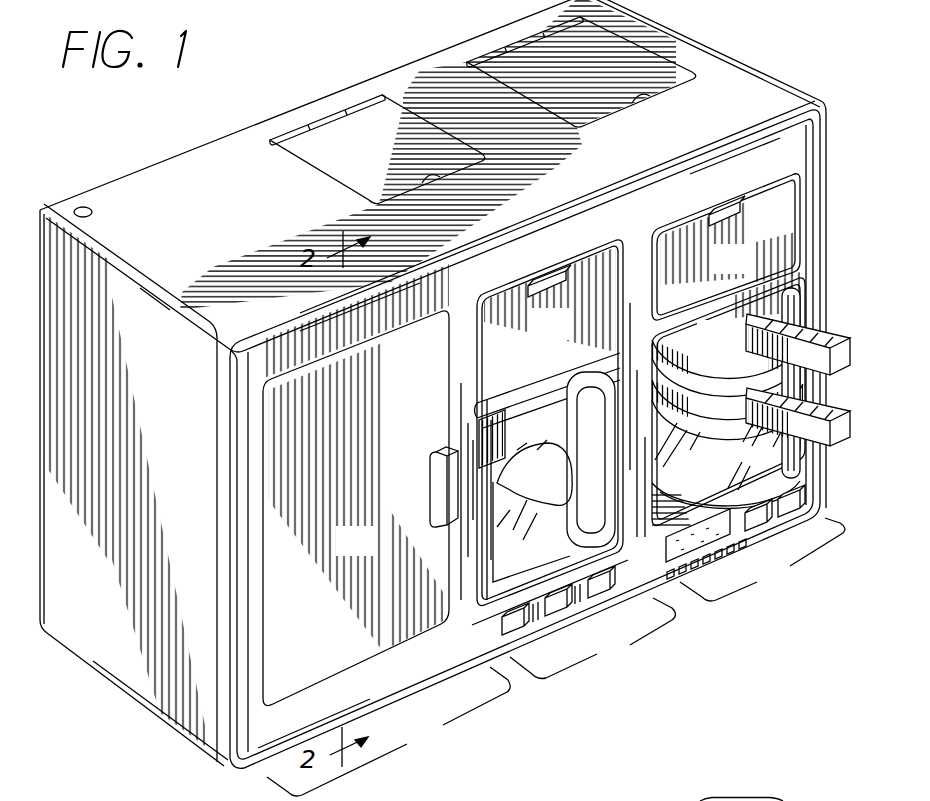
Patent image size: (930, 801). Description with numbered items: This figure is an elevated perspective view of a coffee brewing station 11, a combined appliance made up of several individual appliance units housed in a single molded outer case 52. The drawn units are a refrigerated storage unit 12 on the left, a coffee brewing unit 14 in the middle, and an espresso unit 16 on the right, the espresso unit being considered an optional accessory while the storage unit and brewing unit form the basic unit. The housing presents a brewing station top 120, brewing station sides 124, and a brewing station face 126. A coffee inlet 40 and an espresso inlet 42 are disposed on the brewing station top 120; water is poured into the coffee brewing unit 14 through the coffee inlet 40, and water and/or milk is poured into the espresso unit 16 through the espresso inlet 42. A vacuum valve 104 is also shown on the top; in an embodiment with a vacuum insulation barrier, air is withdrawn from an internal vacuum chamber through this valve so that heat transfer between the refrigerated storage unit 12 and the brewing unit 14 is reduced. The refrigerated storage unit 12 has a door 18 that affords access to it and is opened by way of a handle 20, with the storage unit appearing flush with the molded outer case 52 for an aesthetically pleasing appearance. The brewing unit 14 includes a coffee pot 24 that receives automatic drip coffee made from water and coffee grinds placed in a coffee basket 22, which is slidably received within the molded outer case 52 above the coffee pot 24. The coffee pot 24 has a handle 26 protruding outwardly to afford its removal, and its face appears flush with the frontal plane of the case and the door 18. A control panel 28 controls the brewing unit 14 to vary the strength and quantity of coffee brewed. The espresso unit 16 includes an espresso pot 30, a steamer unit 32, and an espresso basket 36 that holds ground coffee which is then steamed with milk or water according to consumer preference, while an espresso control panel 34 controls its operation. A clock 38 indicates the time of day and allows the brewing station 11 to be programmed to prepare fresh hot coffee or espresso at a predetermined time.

The coffee brewing station 11 is at (162, 752).
The refrigerated storage unit 12 is at (388, 731).
The coffee brewing unit 14 is at (593, 638).
The espresso unit 16 is at (762, 559).
The door 18 is at (372, 552).
The handle 20 is at (438, 476).
The coffee basket 22 is at (570, 338).
The coffee pot 24 is at (478, 493).
The handle 26 is at (573, 523).
The control panel 28 is at (573, 538).
The espresso pot 30 is at (733, 452).
The steamer unit 32 is at (733, 348).
The espresso control panel 34 is at (782, 497).
The espresso basket 36 is at (748, 272).
The clock 38 is at (690, 532).
The coffee inlet 40 is at (392, 165).
The espresso inlet 42 is at (597, 88).
The molded outer case 52 is at (723, 63).
The vacuum valve 104 is at (92, 209).
The brewing station top 120 is at (700, 152).
The brewing station sides 124 is at (201, 393).
The brewing station face 126 is at (560, 246).